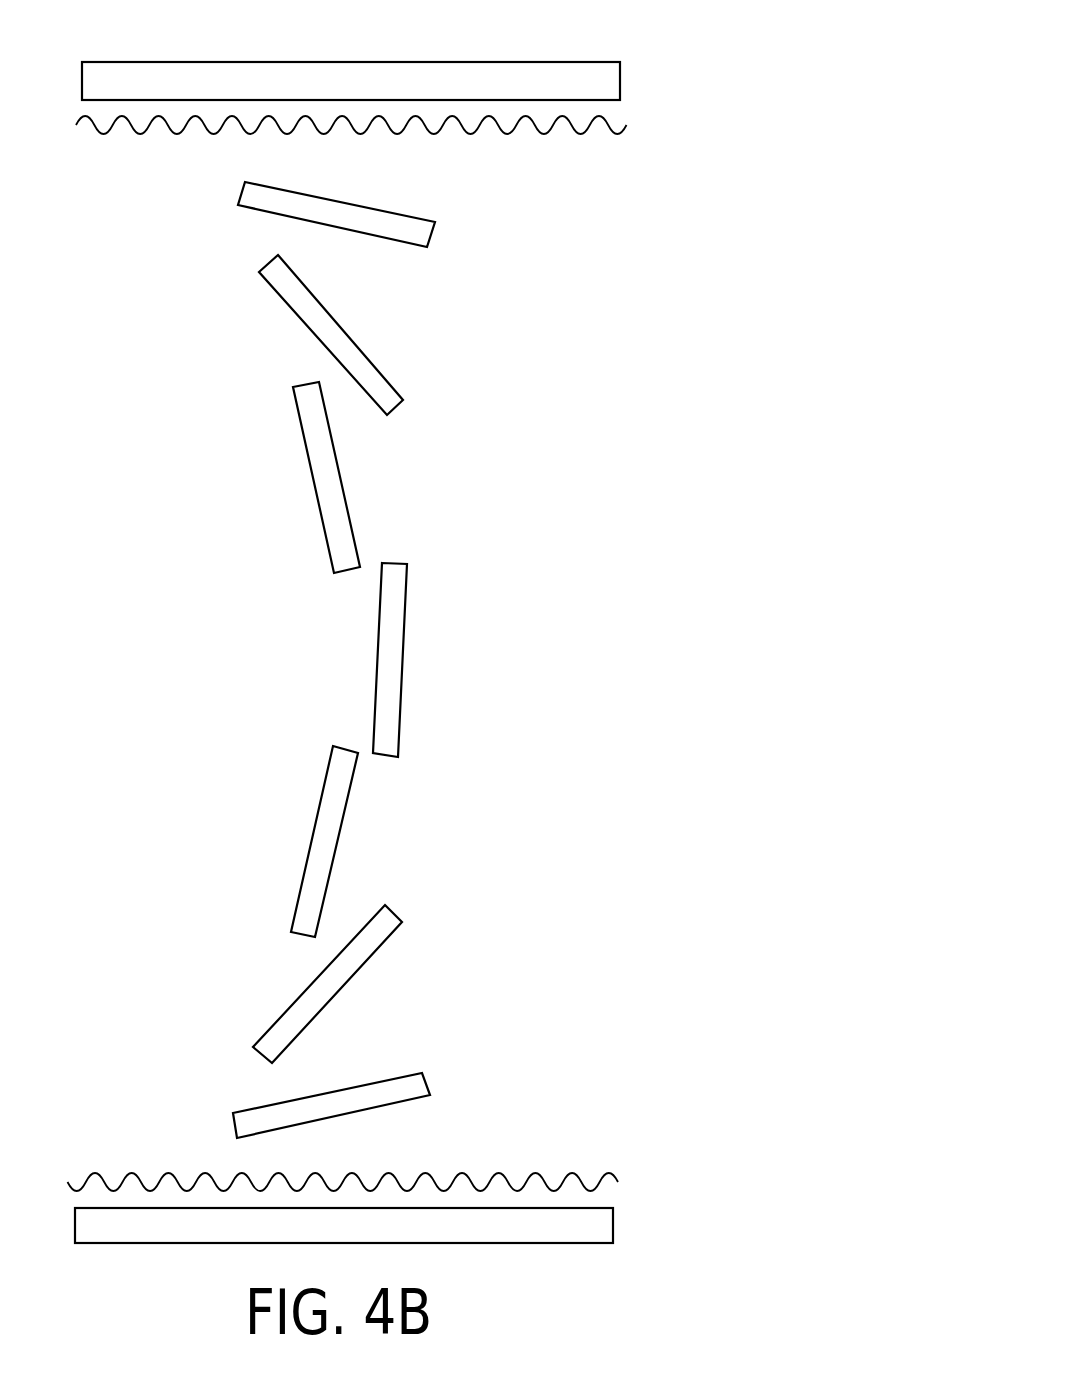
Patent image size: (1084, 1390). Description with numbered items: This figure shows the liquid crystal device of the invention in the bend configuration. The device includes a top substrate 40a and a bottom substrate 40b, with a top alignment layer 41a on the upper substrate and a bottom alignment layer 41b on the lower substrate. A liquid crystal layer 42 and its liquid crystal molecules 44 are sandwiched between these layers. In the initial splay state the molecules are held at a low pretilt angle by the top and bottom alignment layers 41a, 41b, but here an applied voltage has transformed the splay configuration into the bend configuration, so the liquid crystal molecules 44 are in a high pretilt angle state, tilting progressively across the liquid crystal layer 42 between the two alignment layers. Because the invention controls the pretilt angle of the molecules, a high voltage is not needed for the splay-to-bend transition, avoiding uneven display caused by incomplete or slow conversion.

The top substrate 40a is at (610, 79).
The top alignment layer 41a is at (607, 137).
The liquid crystal molecules 44 is at (287, 285).
The liquid crystal layer 42 is at (522, 632).
The bottom alignment layer 41b is at (575, 1173).
The bottom substrate 40b is at (588, 1233).